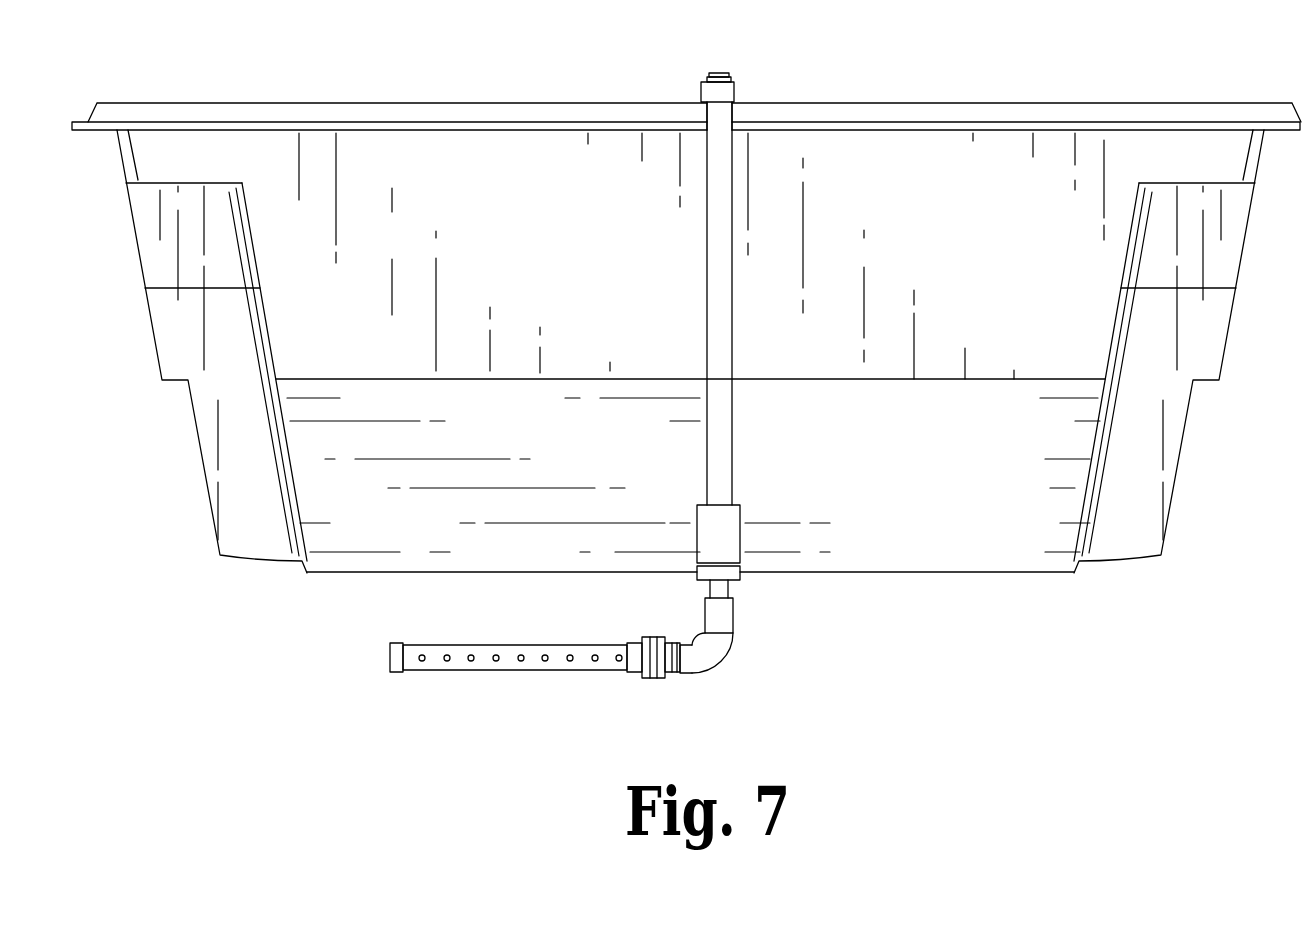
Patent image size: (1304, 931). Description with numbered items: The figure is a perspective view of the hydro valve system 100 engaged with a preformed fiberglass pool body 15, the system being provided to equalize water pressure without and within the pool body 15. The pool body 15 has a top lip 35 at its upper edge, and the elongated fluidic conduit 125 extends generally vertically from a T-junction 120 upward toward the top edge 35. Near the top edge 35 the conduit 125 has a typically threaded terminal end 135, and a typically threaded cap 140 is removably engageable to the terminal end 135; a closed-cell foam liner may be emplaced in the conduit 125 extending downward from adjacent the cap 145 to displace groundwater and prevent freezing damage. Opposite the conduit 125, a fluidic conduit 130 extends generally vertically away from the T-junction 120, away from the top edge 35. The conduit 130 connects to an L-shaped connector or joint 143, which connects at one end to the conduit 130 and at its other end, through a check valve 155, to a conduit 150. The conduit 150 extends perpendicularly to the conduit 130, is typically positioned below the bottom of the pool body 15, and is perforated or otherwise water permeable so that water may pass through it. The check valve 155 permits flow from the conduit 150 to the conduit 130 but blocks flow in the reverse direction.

The pool body 15 is at (516, 186).
The top lip 35 is at (1152, 103).
The hydro valve system 100 is at (353, 614).
The fluidic conduit 125 is at (706, 285).
The cap 140 is at (700, 92).
The cap 145 is at (718, 73).
The terminal end 135 is at (733, 110).
The T-junction 120 is at (742, 540).
The fluidic conduit 130 is at (733, 620).
The L-shaped connector 143 is at (715, 652).
The check valve 155 is at (658, 680).
The conduit 150 is at (573, 672).